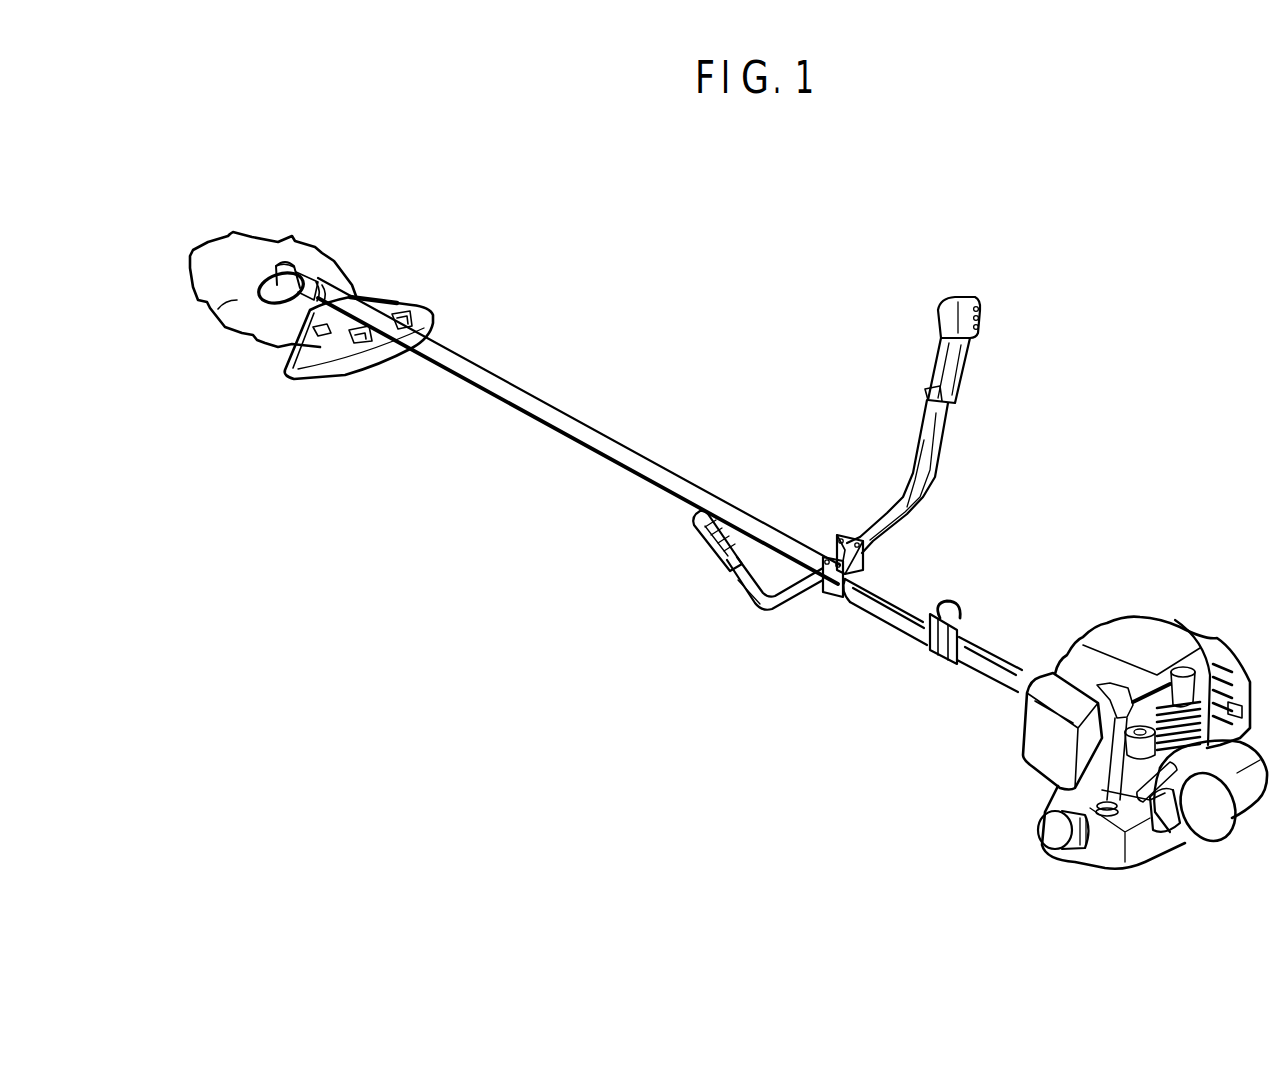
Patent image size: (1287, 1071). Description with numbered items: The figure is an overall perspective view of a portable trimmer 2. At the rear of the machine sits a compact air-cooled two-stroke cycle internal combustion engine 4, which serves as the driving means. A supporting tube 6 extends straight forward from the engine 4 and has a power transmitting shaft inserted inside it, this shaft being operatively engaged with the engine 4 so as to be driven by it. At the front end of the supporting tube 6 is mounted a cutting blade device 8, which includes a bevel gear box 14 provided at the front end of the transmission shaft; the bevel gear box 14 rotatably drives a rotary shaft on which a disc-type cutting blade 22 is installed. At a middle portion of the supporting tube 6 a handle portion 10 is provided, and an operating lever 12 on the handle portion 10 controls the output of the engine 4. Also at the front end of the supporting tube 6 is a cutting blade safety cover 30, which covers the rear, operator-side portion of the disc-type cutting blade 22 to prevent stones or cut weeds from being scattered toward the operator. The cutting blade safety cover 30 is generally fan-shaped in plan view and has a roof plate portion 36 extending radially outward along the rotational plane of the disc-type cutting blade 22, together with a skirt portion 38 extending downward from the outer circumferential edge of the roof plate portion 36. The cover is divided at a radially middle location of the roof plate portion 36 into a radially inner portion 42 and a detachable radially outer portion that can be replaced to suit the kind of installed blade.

The portable trimmer 2 is at (703, 273).
The internal combustion engine 4 is at (1173, 651).
The supporting tube 6 is at (573, 437).
The cutting blade device 8 is at (327, 252).
The handle portion 10 is at (993, 355).
The operating lever 12 is at (936, 328).
The bevel gear box 14 is at (285, 265).
The disc-type cutting blade 22 is at (235, 302).
The cutting blade safety cover 30 is at (526, 256).
The roof plate portion 36 is at (340, 343).
The skirt portion 38 is at (350, 368).
The radially inner portion 42 is at (373, 298).